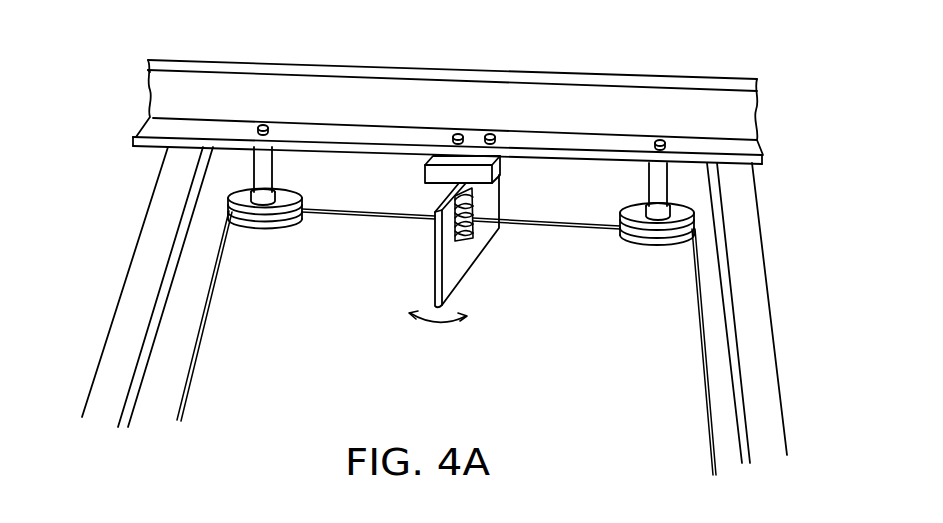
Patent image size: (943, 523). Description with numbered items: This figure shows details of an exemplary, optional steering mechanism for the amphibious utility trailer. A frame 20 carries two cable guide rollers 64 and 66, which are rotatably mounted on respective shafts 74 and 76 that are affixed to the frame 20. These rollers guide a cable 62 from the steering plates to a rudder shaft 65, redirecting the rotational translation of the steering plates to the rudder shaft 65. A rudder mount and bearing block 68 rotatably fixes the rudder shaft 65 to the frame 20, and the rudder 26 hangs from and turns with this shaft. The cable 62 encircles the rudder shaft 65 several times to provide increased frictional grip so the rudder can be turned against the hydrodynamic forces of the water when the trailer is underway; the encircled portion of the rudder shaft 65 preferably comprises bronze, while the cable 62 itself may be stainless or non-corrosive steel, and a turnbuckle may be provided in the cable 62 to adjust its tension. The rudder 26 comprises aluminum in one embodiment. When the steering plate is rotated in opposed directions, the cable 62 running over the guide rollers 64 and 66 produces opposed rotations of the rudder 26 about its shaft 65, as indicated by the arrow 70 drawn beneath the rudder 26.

The frame 20 is at (323, 64).
The rudder 26 is at (450, 262).
The cable 62 is at (215, 295).
The cable guide roller 64 is at (652, 248).
The rudder shaft 65 is at (472, 240).
The cable guide roller 66 is at (273, 232).
The rudder mount and bearing block 68 is at (503, 162).
The arrow 70 is at (438, 324).
The shaft 74 is at (650, 186).
The shaft 76 is at (268, 173).